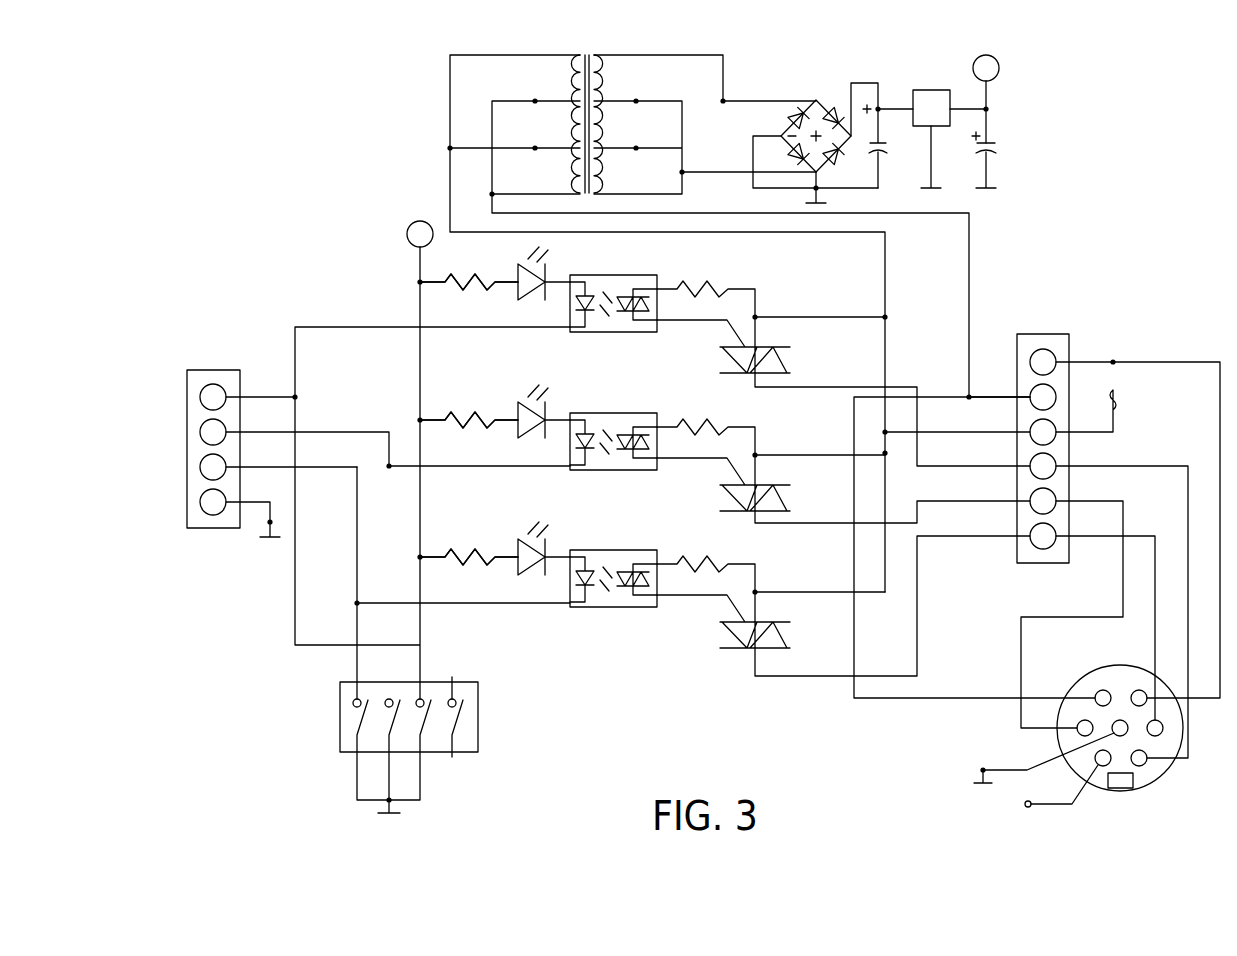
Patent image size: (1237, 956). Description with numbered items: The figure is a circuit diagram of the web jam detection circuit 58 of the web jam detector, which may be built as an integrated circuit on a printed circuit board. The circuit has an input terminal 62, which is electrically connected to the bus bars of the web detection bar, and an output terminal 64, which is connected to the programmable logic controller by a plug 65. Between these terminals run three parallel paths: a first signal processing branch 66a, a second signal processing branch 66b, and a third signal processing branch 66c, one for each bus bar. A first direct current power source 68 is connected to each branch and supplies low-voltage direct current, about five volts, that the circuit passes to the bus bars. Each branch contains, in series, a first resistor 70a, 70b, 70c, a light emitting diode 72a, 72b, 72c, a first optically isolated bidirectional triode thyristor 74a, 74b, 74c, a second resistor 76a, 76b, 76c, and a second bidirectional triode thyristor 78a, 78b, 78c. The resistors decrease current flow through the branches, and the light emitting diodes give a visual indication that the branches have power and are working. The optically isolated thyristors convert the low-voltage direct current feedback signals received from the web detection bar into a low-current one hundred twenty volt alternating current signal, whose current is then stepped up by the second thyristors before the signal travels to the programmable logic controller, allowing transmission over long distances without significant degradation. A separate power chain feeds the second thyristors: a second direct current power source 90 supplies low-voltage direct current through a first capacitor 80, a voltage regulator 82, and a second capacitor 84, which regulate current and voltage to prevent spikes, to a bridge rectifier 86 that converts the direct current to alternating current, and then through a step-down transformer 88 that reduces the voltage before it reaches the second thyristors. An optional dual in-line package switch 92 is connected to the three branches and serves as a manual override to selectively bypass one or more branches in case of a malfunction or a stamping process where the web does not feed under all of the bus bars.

The web jam detection circuit 58 is at (237, 178).
The input terminal 62 is at (215, 370).
The output terminal 64 is at (1043, 334).
The plug 65 is at (1160, 775).
The first signal processing branch 66a is at (388, 300).
The second signal processing branch 66b is at (405, 578).
The third signal processing branch 66c is at (410, 428).
The first direct current power source 68 is at (410, 224).
The first resistor 70a is at (470, 296).
The first resistor 70b is at (470, 571).
The first resistor 70c is at (470, 434).
The light emitting diode 72a is at (530, 300).
The light emitting diode 72b is at (530, 575).
The light emitting diode 72c is at (530, 438).
The first optically isolated bidirectional triode thyristor 74a is at (615, 335).
The first optically isolated bidirectional triode thyristor 74b is at (615, 610).
The first optically isolated bidirectional triode thyristor 74c is at (615, 473).
The second resistor 76a is at (712, 276).
The second resistor 76b is at (712, 551).
The second resistor 76c is at (712, 414).
The second bidirectional triode thyristor 78a is at (790, 360).
The second bidirectional triode thyristor 78b is at (790, 635).
The second bidirectional triode thyristor 78c is at (790, 498).
The first capacitor 80 is at (997, 155).
The voltage regulator 82 is at (931, 90).
The second capacitor 84 is at (882, 153).
The bridge rectifier 86 is at (828, 100).
The step-down transformer 88 is at (725, 50).
The second direct current power source 90 is at (999, 70).
The dual in-line package switch 92 is at (340, 718).